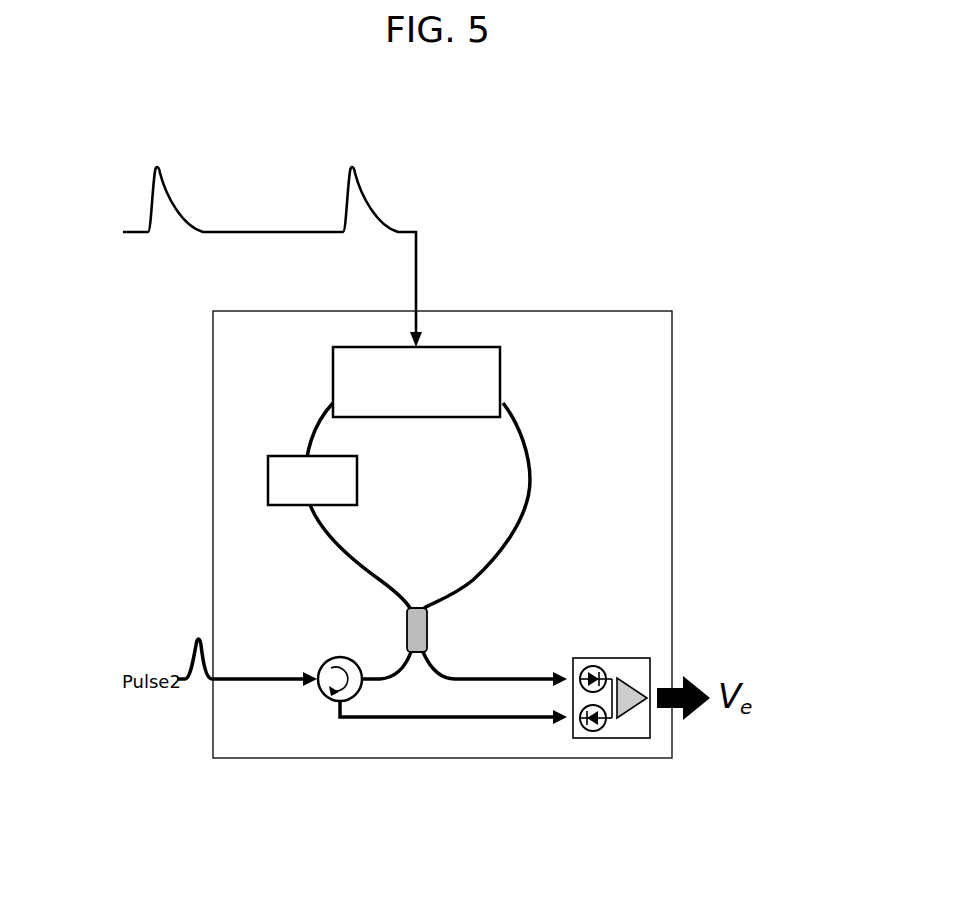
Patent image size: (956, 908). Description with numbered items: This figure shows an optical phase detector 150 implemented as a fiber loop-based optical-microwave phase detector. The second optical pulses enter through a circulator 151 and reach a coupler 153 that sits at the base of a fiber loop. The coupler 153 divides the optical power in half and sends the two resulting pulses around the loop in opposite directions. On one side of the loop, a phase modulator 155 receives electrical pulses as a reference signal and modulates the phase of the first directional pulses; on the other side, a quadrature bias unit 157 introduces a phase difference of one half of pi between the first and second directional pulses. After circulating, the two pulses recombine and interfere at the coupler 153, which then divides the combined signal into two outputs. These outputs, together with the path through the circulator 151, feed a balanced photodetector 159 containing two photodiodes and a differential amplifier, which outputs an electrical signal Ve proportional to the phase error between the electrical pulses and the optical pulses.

The optical phase detector 150 is at (563, 311).
The circulator 151 is at (333, 657).
The coupler 153 is at (427, 630).
The phase modulator 155 is at (421, 418).
The quadrature bias unit 157 is at (285, 456).
The balanced photodetector 159 is at (612, 658).